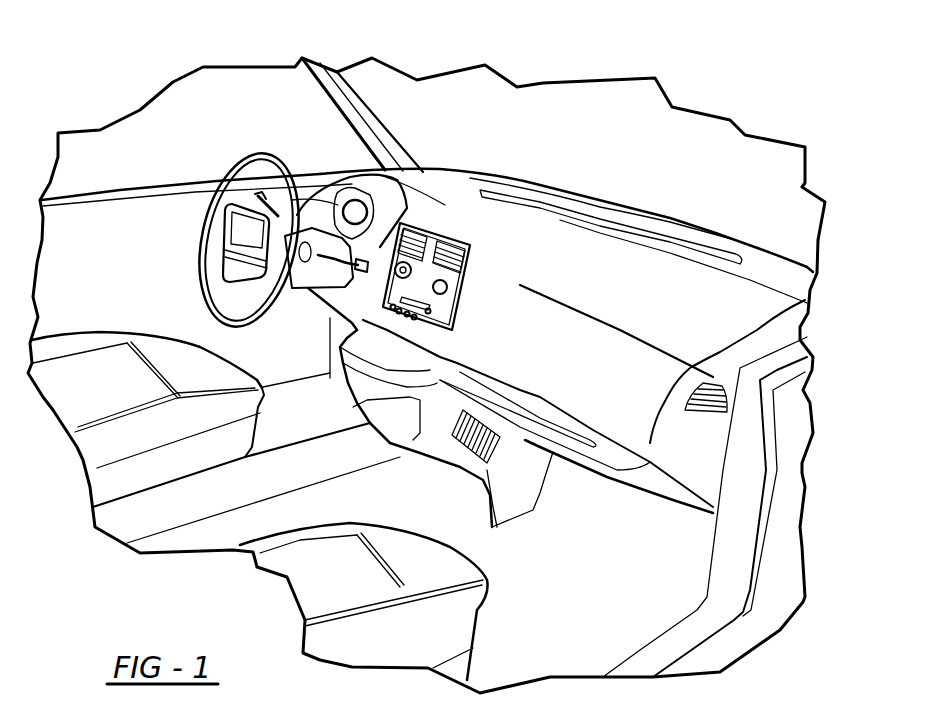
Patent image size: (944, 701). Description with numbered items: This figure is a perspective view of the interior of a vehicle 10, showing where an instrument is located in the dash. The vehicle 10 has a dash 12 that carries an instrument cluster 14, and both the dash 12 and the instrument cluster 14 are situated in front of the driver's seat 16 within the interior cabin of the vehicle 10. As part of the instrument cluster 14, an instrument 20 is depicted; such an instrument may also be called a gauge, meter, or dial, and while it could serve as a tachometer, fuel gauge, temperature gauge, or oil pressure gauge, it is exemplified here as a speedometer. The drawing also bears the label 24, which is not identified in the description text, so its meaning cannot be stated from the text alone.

The vehicle 10 is at (756, 77).
The dash 12 is at (612, 272).
The instrument cluster 14 is at (353, 170).
The driver's seat 16 is at (115, 393).
The instrument 20 is at (343, 210).
The windshield 24 is at (185, 155).